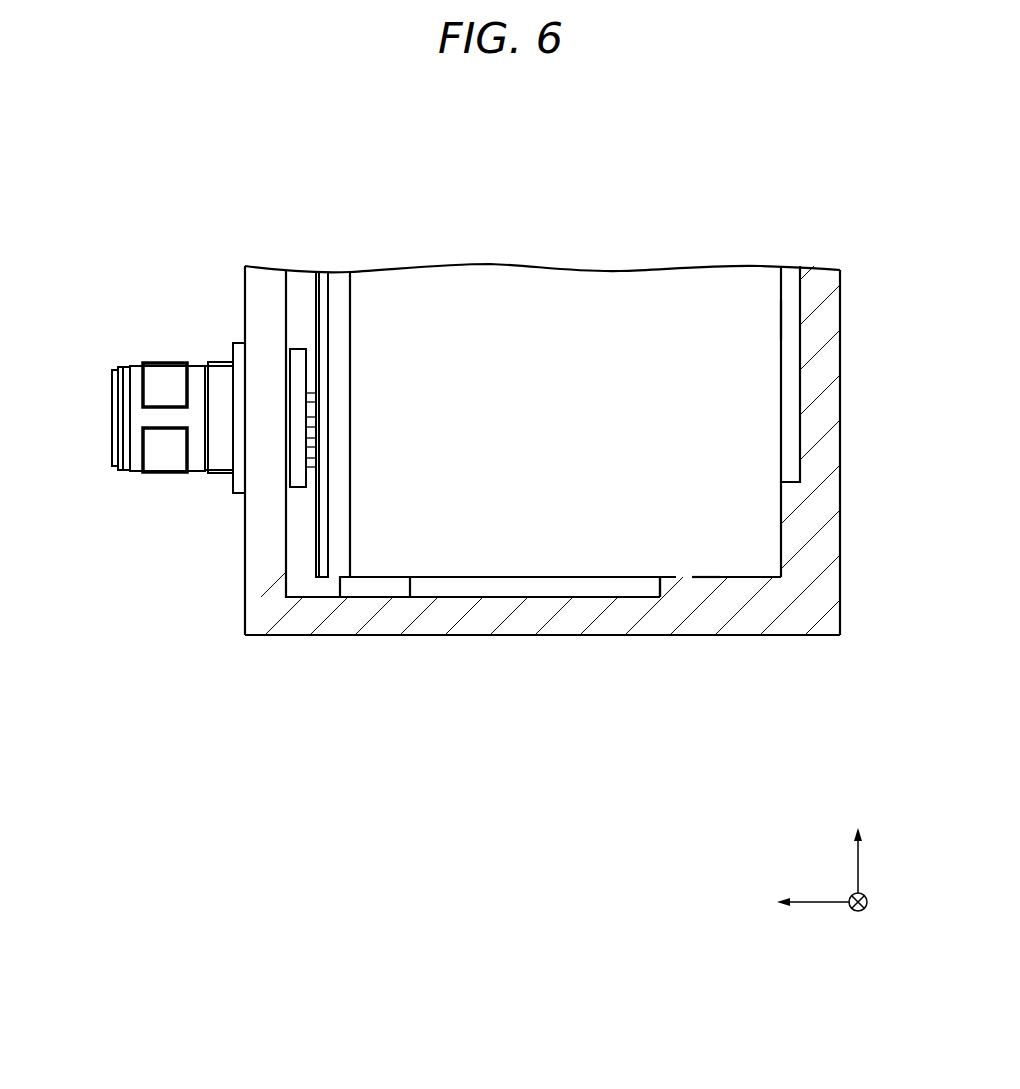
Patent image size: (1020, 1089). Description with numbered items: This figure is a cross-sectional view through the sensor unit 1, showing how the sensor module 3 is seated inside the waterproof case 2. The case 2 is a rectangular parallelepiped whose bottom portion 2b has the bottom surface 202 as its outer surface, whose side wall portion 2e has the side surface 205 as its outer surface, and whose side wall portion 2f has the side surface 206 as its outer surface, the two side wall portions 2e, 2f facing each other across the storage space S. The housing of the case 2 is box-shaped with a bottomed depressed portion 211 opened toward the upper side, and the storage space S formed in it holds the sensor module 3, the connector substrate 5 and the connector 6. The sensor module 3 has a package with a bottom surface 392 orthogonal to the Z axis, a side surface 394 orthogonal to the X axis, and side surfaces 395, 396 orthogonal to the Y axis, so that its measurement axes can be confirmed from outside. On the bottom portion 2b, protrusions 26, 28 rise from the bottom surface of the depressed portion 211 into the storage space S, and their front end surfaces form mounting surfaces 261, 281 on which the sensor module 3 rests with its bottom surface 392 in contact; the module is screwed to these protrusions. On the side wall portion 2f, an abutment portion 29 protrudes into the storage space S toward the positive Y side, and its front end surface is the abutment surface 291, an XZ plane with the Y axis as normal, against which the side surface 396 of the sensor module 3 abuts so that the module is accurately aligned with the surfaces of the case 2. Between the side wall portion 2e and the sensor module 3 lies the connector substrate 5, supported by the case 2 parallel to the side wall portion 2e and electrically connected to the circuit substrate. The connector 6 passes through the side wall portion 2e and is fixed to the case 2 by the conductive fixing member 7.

The sensor unit 1 is at (731, 156).
The case 2 is at (547, 644).
The bottom portion 2b is at (630, 625).
The side wall portion 2e is at (255, 530).
The side wall portion 2f is at (826, 386).
The sensor module 3 is at (537, 255).
The connector substrate 5 is at (310, 550).
The connector 6 is at (130, 479).
The fixing member 7 is at (240, 385).
The protrusion 26 is at (353, 588).
The protrusion 28 is at (707, 590).
The abutment portion 29 is at (798, 553).
The bottom surface 202 is at (760, 640).
The side surface 205 is at (245, 324).
The side surface 206 is at (842, 468).
The depressed portion 211 is at (470, 586).
The mounting surface 261 is at (398, 578).
The mounting surface 281 is at (692, 577).
The abutment surface 291 is at (773, 513).
The bottom surface 392 is at (485, 580).
The side surface 394 is at (620, 293).
The side surface 395 is at (349, 305).
The side surface 396 is at (782, 328).
The storage space S is at (791, 282).